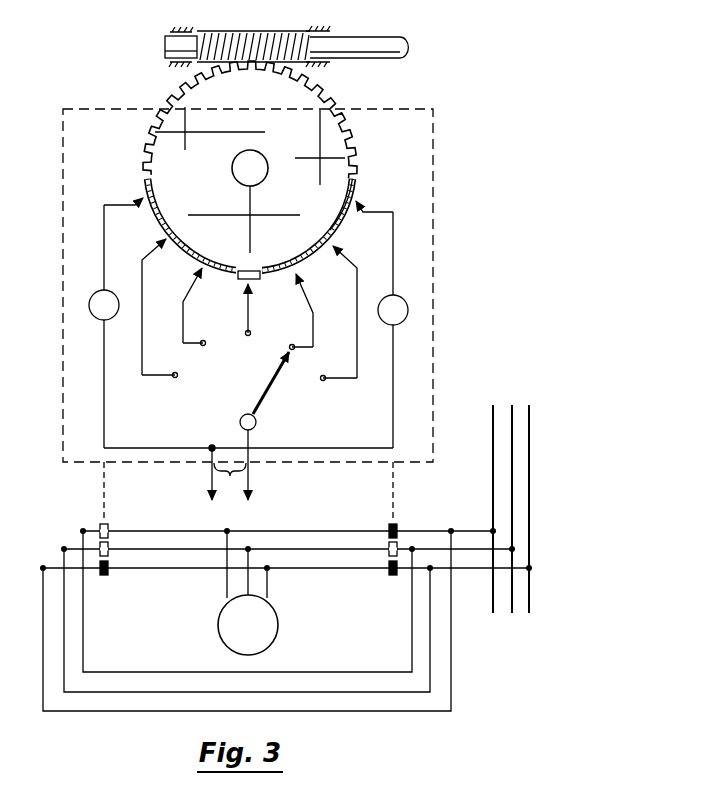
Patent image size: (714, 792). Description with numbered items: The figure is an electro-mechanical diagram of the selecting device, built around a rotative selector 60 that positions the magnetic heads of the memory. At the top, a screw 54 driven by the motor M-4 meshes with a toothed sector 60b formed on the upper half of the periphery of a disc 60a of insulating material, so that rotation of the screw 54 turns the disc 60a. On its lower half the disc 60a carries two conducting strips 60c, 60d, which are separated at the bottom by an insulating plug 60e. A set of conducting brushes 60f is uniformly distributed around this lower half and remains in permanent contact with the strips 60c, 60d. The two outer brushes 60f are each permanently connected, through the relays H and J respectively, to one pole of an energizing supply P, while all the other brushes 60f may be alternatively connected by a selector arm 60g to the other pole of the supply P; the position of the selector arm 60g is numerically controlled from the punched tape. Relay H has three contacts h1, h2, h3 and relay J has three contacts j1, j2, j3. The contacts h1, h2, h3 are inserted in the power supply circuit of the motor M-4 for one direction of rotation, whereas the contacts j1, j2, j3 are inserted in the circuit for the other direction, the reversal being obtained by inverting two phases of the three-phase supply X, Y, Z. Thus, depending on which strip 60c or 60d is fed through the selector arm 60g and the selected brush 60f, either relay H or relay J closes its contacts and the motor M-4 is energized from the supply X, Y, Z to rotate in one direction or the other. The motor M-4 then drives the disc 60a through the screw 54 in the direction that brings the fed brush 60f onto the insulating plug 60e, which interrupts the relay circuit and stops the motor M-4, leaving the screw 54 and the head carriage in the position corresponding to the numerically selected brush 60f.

The screw 54 is at (388, 44).
The rotative selector 60 is at (248, 285).
The disc 60a is at (259, 157).
The toothed sector 60b is at (333, 91).
The conducting strip 60c is at (153, 187).
The conducting strip 60d is at (345, 237).
The insulating plug 60e is at (245, 270).
The conducting brushes 60f is at (124, 209).
The selector arm 60g is at (273, 381).
The relay H is at (104, 326).
The relay J is at (393, 330).
The energizing supply P is at (230, 474).
The contact h1 is at (114, 523).
The contact h2 is at (114, 545).
The contact h3 is at (113, 575).
The contact j1 is at (401, 522).
The contact j2 is at (401, 544).
The contact j3 is at (400, 576).
The motor M-4 is at (248, 593).
The power supply phase X is at (493, 494).
The power supply phase Y is at (512, 494).
The power supply phase Z is at (529, 494).